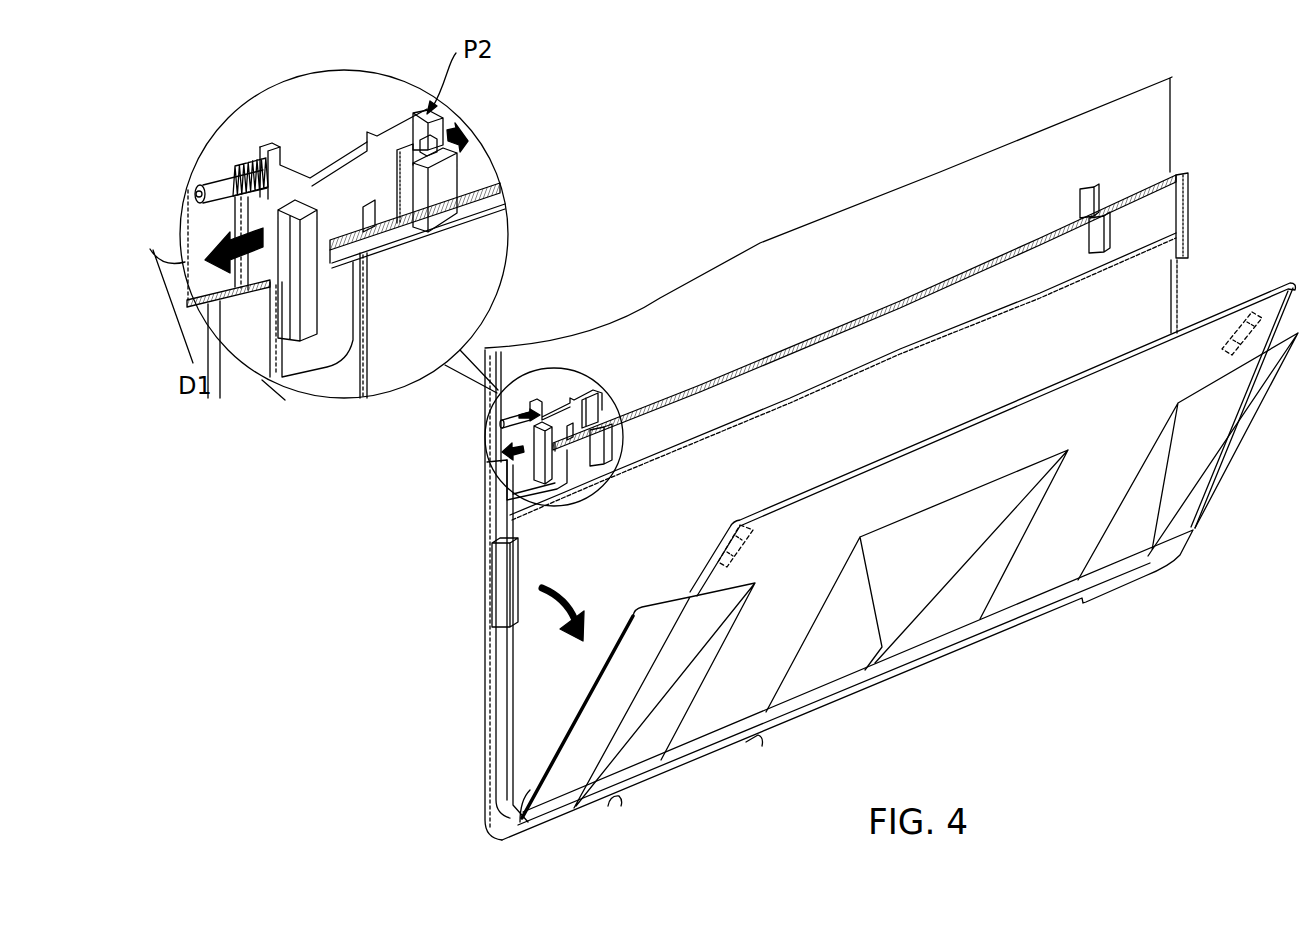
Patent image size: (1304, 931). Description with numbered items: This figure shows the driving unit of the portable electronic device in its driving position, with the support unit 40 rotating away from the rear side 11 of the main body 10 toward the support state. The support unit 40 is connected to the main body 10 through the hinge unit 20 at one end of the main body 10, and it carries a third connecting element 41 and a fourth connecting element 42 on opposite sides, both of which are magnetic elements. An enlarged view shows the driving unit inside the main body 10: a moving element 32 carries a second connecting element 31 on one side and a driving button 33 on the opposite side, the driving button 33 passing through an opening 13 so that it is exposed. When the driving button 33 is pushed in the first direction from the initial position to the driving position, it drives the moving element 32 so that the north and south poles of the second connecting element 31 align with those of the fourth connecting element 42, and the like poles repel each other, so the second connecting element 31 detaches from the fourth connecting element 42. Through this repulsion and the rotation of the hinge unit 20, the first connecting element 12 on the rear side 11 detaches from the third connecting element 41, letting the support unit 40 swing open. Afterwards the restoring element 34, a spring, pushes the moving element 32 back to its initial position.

The main body 10 is at (488, 698).
The rear side 11 is at (1170, 203).
The first connecting element 12 is at (1082, 192).
The opening 13 is at (336, 325).
The hinge unit 20 is at (1000, 637).
The second connecting element 31 is at (425, 128).
The moving element 32 is at (344, 150).
The driving button 33 is at (287, 243).
The restoring element 34 is at (232, 163).
The support unit 40 is at (943, 452).
The third connecting element 41 is at (1250, 313).
The fourth connecting element 42 is at (440, 172).